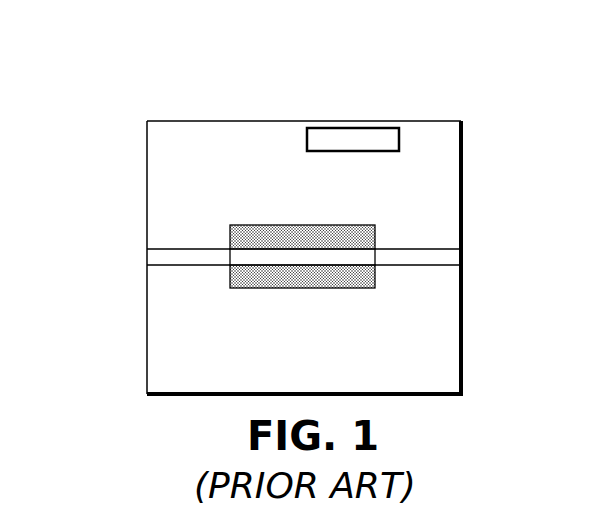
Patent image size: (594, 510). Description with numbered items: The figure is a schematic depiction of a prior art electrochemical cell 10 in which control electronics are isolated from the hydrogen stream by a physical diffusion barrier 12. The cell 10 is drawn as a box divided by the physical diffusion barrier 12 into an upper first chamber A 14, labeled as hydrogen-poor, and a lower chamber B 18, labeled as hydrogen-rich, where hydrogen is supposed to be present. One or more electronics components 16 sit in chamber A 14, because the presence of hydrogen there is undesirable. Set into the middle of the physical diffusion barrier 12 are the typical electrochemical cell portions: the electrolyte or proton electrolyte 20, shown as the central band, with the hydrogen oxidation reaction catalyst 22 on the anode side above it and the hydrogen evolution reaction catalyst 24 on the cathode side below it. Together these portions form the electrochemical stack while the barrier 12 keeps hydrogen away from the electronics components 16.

The electrochemical cell 10 is at (145, 102).
The physical diffusion barrier 12 is at (173, 257).
The first chamber A 14 is at (425, 195).
The electronics components 16 is at (347, 140).
The chamber B 18 is at (428, 337).
The proton electrolyte 20 is at (249, 256).
The hydrogen oxidation reaction catalyst 22 is at (230, 237).
The hydrogen evolution reaction catalyst 24 is at (273, 290).